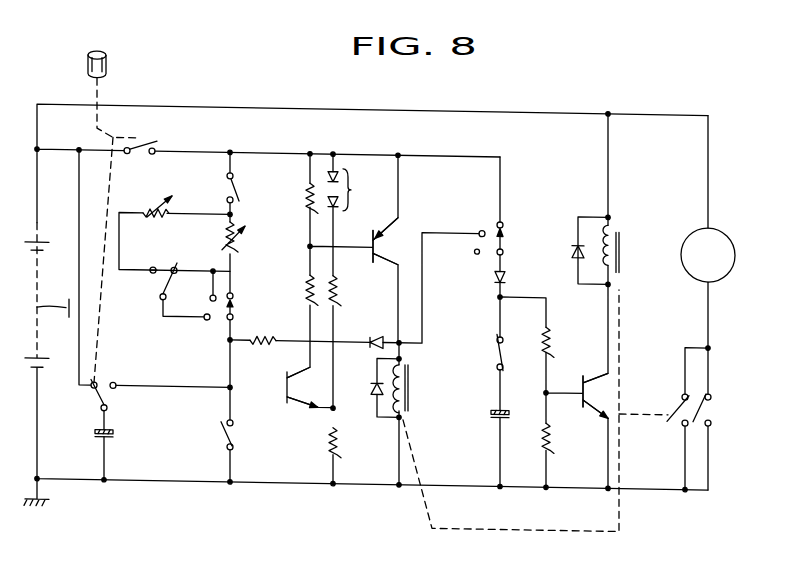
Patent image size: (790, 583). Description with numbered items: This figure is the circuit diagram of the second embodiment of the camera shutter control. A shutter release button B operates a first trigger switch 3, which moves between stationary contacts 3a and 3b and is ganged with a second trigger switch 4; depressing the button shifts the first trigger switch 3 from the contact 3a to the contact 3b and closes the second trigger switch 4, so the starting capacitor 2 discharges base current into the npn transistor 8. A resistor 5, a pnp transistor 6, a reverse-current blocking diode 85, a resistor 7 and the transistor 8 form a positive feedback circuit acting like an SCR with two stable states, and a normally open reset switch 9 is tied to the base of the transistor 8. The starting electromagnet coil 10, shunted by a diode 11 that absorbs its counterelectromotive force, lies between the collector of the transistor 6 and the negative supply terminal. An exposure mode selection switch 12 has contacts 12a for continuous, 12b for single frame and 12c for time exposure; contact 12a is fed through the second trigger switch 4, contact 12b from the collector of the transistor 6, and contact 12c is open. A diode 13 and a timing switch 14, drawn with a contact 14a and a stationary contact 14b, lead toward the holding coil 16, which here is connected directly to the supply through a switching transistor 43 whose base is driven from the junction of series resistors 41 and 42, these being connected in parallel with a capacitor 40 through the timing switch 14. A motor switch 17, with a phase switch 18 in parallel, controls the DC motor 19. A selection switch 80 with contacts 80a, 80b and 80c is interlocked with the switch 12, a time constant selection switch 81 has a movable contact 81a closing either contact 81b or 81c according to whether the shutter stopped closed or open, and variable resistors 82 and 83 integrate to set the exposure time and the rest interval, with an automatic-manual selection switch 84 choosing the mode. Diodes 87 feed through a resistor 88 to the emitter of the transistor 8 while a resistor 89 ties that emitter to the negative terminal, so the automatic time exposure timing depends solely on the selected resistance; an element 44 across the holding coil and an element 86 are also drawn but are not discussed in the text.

The shutter release button B is at (106, 58).
The starting capacitor 2 is at (114, 432).
The first trigger switch 3 is at (99, 376).
The stationary contact 3a is at (91, 384).
The stationary contact 3b is at (116, 386).
The second trigger switch 4 is at (157, 138).
The resistor 5 is at (306, 287).
The pnp transistor 6 is at (378, 234).
The resistor 7 is at (265, 340).
The npn transistor 8 is at (307, 388).
The reset switch 9 is at (222, 430).
The starting electromagnet coil 10 is at (408, 391).
The diode 11 is at (377, 382).
The exposure mode selection switch 12 is at (503, 238).
The stationary contact 12a is at (506, 213).
The stationary contact 12b is at (480, 222).
The stationary contact 12c is at (475, 244).
The diode 13 is at (495, 273).
The timing switch 14 is at (495, 364).
The switch arm 14a is at (495, 344).
The stationary contact 14b is at (497, 330).
The holding electromagnet coil 16 is at (620, 222).
The motor switch 17 is at (672, 399).
The phase switch 18 is at (700, 401).
The DC motor 19 is at (712, 215).
The capacitor 40 is at (492, 407).
The resistor 41 is at (552, 329).
The resistor 42 is at (552, 428).
The switching transistor 43 is at (585, 378).
The diode 44 is at (570, 244).
The selection switch 80 is at (228, 316).
The stationary contact 80a is at (233, 289).
The stationary contact 80b is at (210, 294).
The stationary contact 80c is at (205, 316).
The time constant selection switch 81 is at (160, 297).
The movable contact 81a is at (164, 249).
The stationary contact 81b is at (172, 259).
The stationary contact 81c is at (151, 270).
The variable resistor 82 is at (158, 205).
The variable resistor 83 is at (242, 232).
The automatic-manual exposure mode selection switch 84 is at (238, 181).
The diode 85 is at (378, 330).
The resistor 86 is at (312, 198).
The diodes 87 is at (355, 190).
The resistor 88 is at (338, 282).
The resistor 89 is at (340, 431).